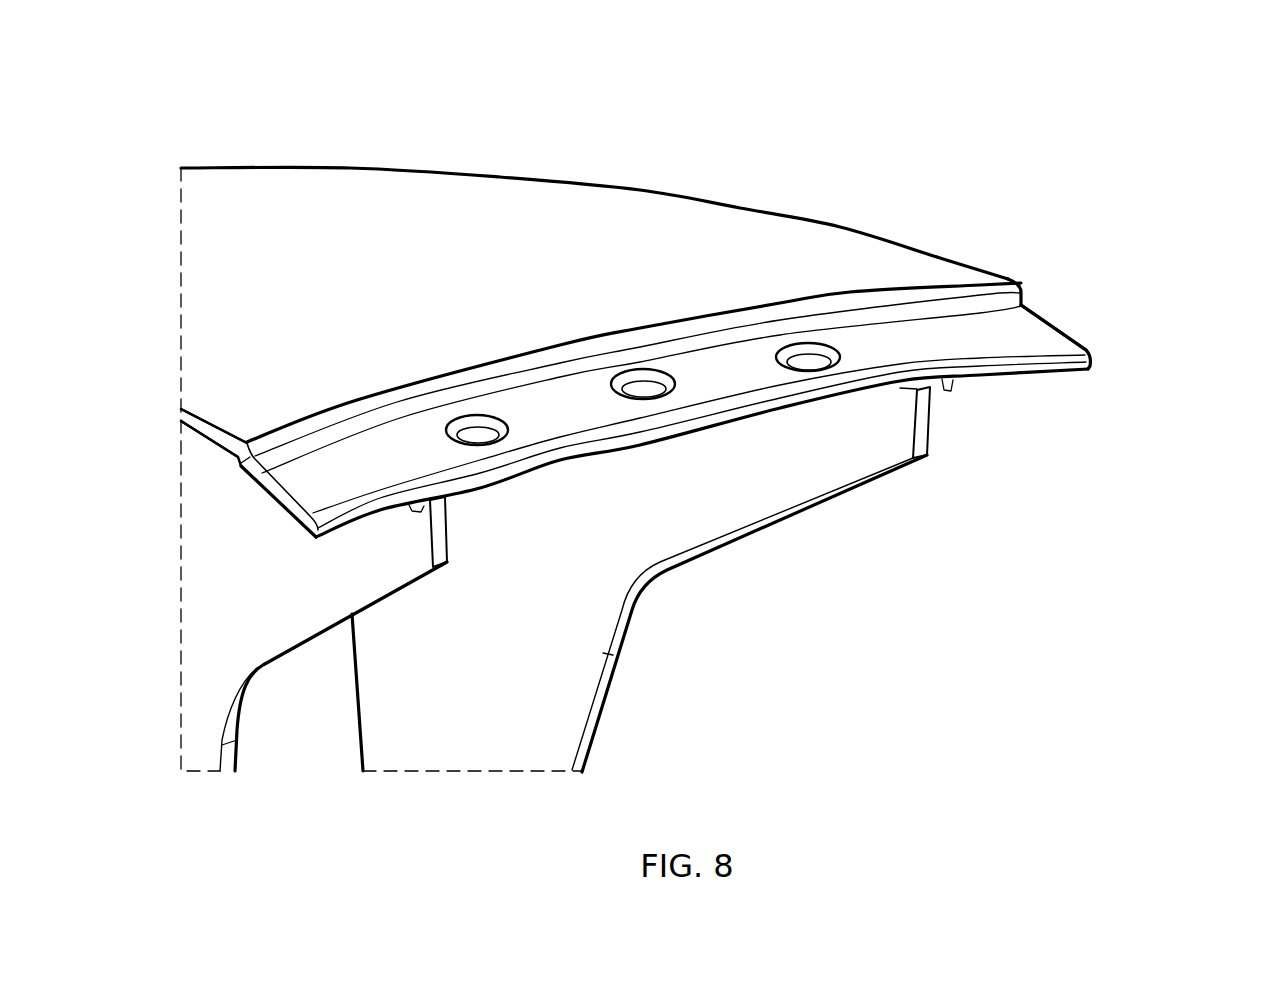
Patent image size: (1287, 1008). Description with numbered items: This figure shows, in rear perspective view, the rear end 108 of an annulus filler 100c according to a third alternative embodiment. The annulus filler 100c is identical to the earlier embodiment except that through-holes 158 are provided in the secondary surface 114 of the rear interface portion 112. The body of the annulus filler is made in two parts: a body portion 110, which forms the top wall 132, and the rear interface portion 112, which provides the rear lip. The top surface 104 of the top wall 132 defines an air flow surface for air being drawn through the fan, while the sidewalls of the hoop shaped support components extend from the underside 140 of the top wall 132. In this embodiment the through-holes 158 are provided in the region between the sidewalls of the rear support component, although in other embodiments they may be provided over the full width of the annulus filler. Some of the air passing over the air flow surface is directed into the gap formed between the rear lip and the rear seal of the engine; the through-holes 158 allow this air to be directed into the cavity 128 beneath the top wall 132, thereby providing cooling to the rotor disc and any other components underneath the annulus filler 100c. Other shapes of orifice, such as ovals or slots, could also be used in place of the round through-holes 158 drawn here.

The annulus filler 100c is at (232, 112).
The top surface 104 is at (483, 193).
The top wall 132 is at (437, 192).
The body portion 110 is at (527, 197).
The rear end 108 is at (1090, 415).
The rear interface portion 112 is at (952, 347).
The through-holes 158 is at (477, 423).
The secondary surface 114 is at (1050, 345).
The underside 140 is at (207, 442).
The cavity 128 is at (587, 592).